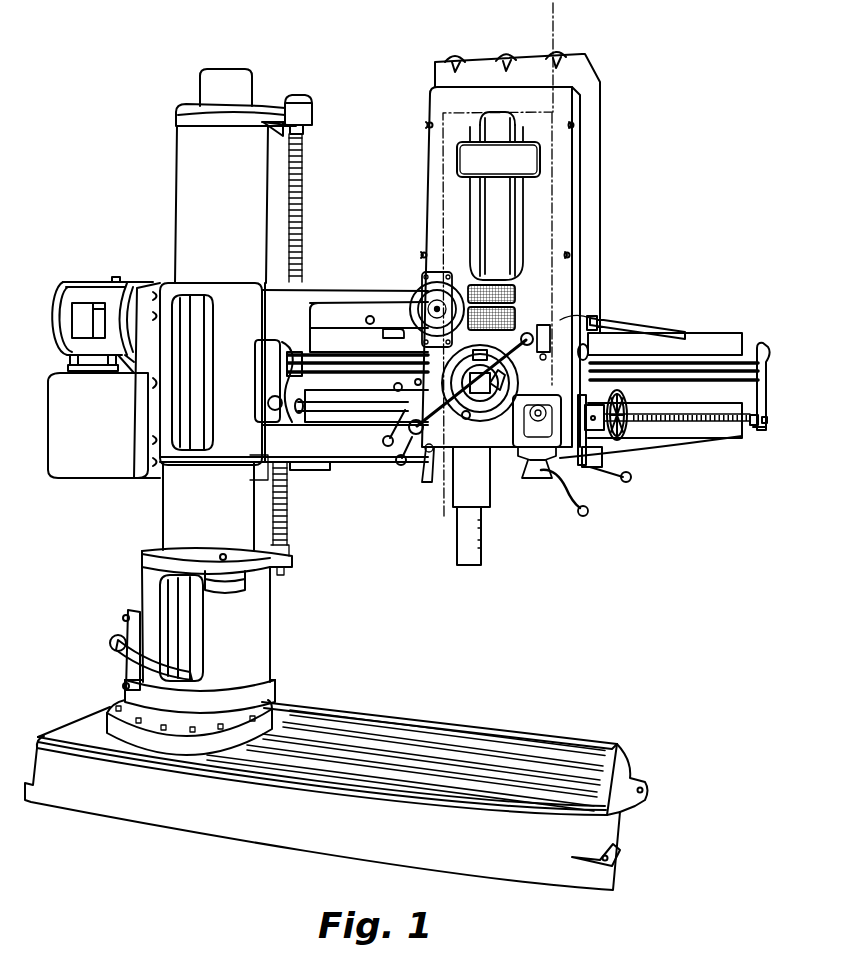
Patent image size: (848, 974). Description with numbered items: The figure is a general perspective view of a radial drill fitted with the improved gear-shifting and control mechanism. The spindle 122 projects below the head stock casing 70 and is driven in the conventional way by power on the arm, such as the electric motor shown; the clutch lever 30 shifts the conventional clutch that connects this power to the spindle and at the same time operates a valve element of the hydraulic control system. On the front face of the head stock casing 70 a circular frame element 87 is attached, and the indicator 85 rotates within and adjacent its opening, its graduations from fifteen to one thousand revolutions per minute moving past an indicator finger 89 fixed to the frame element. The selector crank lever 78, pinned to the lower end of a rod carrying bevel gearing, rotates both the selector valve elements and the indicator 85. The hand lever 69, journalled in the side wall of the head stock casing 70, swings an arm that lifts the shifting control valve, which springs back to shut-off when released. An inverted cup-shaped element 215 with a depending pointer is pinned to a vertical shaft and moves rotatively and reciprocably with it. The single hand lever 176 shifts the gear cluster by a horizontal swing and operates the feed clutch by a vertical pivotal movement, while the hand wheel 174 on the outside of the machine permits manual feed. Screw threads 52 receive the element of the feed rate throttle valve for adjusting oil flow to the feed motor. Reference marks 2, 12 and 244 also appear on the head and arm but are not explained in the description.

The section line 2- 2 is at (572, 16).
The drill head axis / indicator 12 is at (547, 153).
The head stock casing 70 is at (431, 242).
The circular frame element 87 is at (432, 284).
The indicator 85 is at (424, 300).
The indicator finger 89 is at (418, 338).
The inverted cup-shaped element 215 is at (543, 325).
The arm cover 244 is at (652, 330).
The hand lever 176 is at (624, 340).
The hand lever 69 is at (394, 387).
The screw threads 52 is at (522, 422).
The spindle 122 is at (462, 553).
The hand wheel 174 is at (522, 477).
The clutch lever 30 is at (572, 508).
The selector crank lever 78 is at (426, 470).